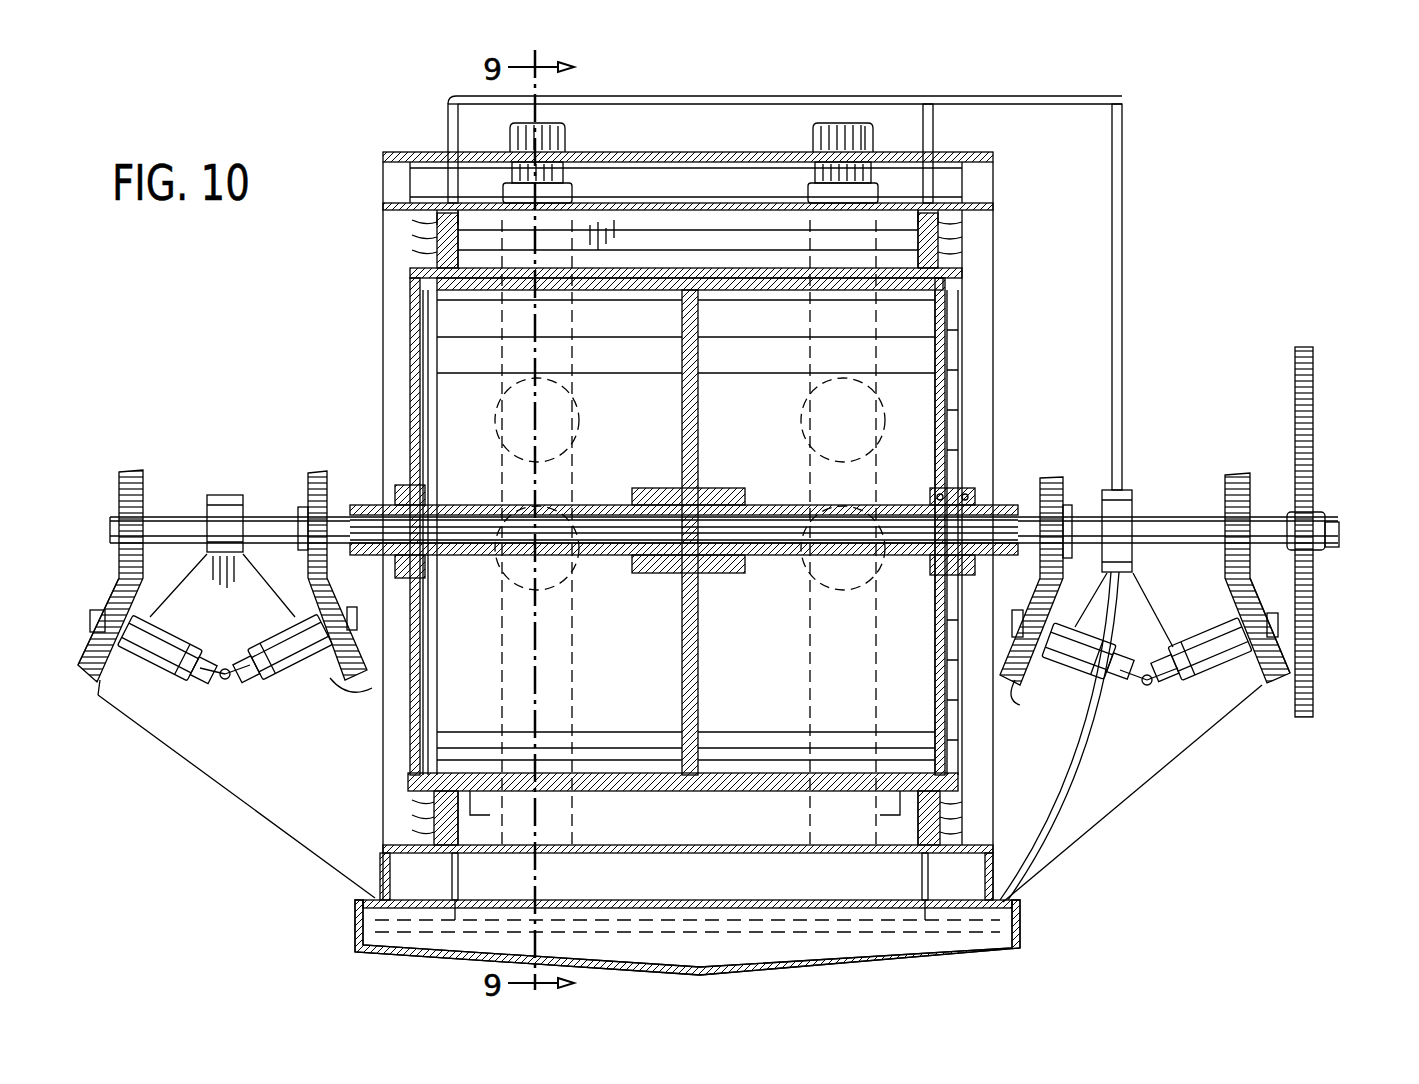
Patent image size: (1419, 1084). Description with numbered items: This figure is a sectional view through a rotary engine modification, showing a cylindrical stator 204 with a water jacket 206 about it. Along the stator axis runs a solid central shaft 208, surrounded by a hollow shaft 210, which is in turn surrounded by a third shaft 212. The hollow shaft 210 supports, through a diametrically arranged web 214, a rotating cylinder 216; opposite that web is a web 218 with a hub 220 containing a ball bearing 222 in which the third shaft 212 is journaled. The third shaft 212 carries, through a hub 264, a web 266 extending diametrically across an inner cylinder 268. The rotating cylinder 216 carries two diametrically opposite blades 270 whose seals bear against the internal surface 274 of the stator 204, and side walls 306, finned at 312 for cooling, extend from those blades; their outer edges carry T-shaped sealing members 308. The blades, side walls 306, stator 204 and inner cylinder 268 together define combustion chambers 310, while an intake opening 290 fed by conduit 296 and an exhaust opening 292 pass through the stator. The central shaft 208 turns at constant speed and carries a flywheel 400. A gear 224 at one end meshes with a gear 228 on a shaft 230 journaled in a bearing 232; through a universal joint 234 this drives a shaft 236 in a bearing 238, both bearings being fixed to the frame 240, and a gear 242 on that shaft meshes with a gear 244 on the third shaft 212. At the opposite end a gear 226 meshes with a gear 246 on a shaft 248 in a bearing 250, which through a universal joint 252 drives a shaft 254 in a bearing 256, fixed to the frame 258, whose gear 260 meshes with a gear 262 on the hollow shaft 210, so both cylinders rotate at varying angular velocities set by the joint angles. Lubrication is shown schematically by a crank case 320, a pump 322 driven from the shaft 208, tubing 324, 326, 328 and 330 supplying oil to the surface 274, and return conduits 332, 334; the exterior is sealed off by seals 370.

The stator 204 is at (720, 203).
The water jacket 206 is at (672, 152).
The solid central shaft 208 is at (760, 555).
The hollow shaft 210 is at (380, 512).
The third shaft 212 is at (705, 488).
The web 214 is at (410, 440).
The rotating cylinder 216 is at (507, 268).
The web 218 is at (945, 445).
The hub 220 is at (965, 488).
The ball bearing 222 is at (935, 488).
The gear 224 is at (1238, 473).
The gear 226 is at (128, 479).
The gear 228 is at (1290, 673).
The shaft 230 is at (1280, 616).
The bearing 232 is at (1195, 667).
The universal joint 234 is at (1147, 687).
The shaft 236 is at (1125, 667).
The bearing 238 is at (1078, 662).
The frame 240 is at (1140, 796).
The gear 242 is at (1015, 701).
The gear 244 is at (1048, 478).
The gear 246 is at (118, 583).
The shaft 248 is at (92, 619).
The bearing 250 is at (142, 674).
The universal joint 252 is at (230, 690).
The shaft 254 is at (228, 668).
The bearing 256 is at (278, 670).
The frame 258 is at (196, 769).
The gear 260 is at (360, 696).
The gear 262 is at (312, 473).
The hub 264 is at (650, 488).
The web 266 is at (682, 406).
The cylinder 268 is at (578, 290).
The blades 270 is at (640, 230).
The internal surface 274 is at (690, 226).
The intake opening 290 is at (565, 381).
The exhaust opening 292 is at (565, 606).
The conduit 296 is at (555, 136).
The side walls 306 is at (918, 246).
The sealing members 308 is at (437, 215).
The combustion chambers 310 is at (697, 310).
The fins 312 is at (412, 234).
The crank case 320 is at (1020, 919).
The pump 322 is at (1132, 490).
The tubing 324 is at (1060, 826).
The tubing 326 is at (1122, 176).
The tubing 328 is at (933, 134).
The tubing 330 is at (448, 132).
The conduit 332 is at (458, 876).
The conduit 334 is at (922, 881).
The seals 370 is at (455, 290).
The flywheel 400 is at (1313, 386).